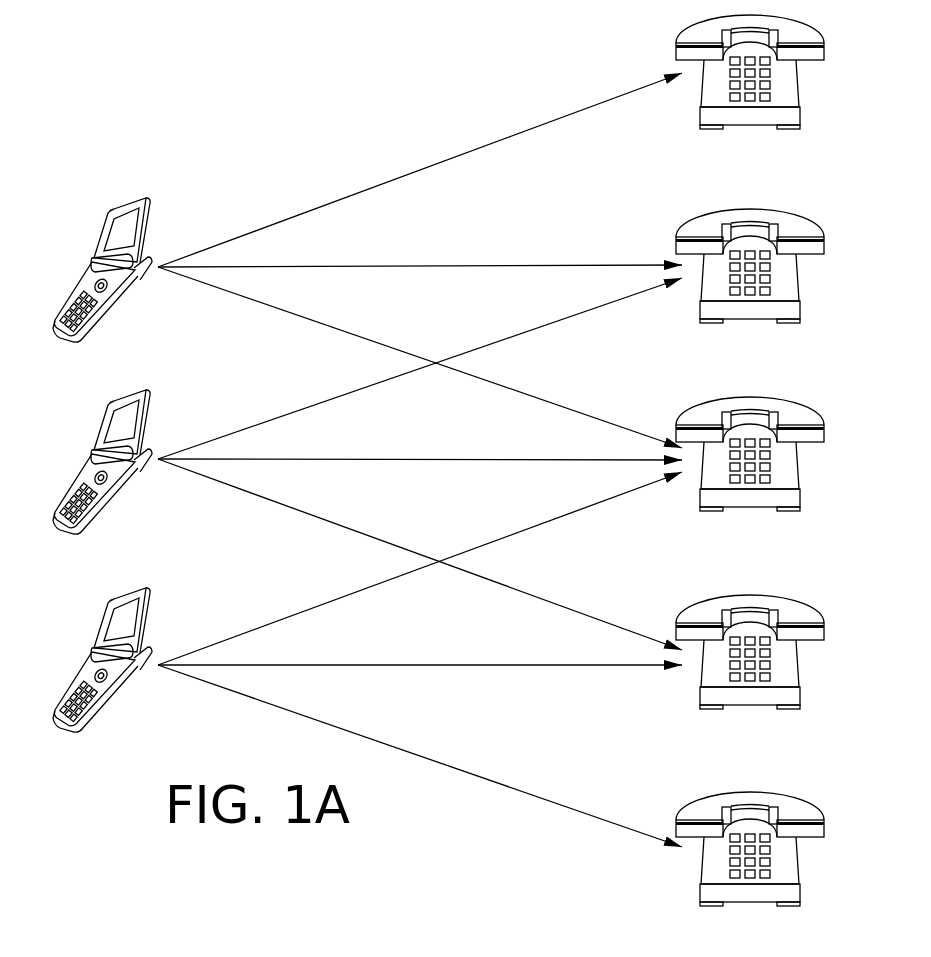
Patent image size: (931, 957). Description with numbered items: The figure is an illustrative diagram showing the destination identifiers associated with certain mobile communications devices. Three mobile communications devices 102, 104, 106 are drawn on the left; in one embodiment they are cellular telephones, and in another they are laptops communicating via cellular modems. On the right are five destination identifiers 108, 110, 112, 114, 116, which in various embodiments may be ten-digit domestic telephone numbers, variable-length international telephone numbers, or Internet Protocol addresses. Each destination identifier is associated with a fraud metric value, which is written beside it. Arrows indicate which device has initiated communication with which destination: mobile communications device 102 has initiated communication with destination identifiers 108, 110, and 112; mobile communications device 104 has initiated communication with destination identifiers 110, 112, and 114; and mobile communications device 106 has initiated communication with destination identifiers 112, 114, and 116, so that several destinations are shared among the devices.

The mobile communications device 102 is at (102, 232).
The mobile communications device 104 is at (102, 424).
The mobile communications device 106 is at (102, 622).
The destination identifier 108 is at (800, 81).
The destination identifier 110 is at (800, 276).
The destination identifier 112 is at (800, 466).
The destination identifier 114 is at (800, 664).
The destination identifier 116 is at (800, 859).